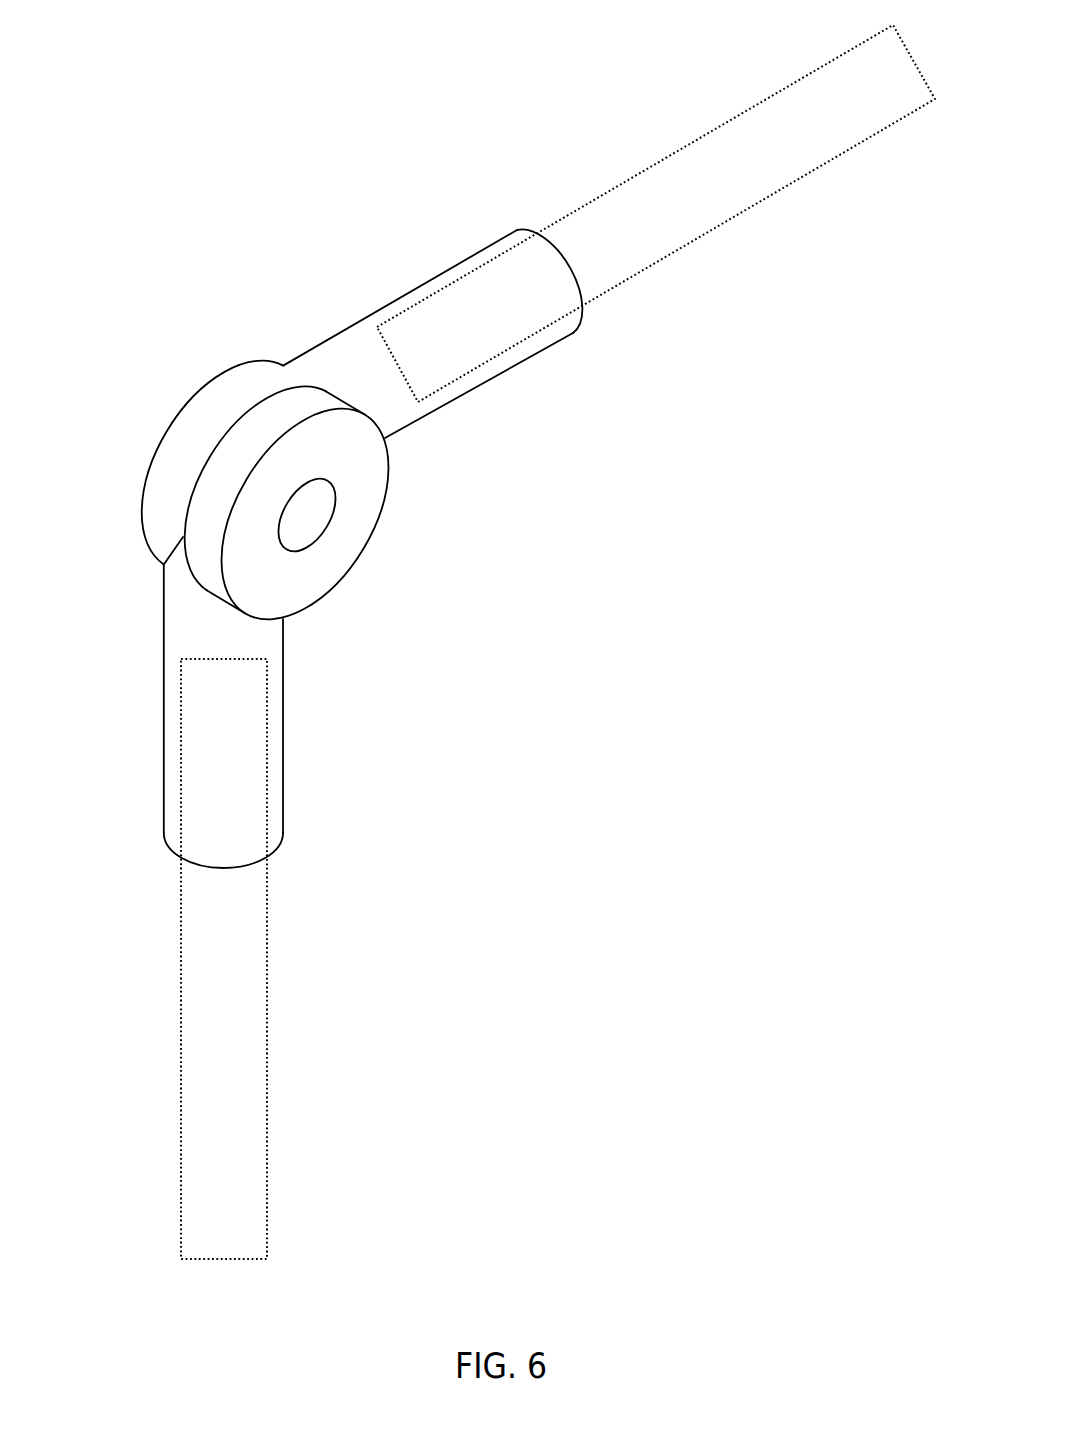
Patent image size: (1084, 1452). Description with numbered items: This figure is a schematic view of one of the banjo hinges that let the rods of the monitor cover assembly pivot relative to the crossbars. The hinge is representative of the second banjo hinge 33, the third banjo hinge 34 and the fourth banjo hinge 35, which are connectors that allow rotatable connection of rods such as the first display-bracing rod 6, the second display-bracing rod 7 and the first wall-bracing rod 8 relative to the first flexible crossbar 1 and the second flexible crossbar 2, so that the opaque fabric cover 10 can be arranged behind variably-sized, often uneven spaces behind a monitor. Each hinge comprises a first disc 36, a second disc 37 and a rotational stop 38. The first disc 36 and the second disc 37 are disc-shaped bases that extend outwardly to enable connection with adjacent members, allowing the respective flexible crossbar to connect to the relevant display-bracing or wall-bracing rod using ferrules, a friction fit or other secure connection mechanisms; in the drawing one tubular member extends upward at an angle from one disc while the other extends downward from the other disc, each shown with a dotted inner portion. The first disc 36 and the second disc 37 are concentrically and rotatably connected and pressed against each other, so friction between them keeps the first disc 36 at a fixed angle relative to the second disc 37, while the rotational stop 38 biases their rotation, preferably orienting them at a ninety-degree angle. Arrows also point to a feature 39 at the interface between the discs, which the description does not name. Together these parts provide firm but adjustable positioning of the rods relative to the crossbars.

The first flexible crossbar 1 is at (609, 231).
The second flexible crossbar 2 is at (728, 220).
The first display-bracing rod 6 is at (322, 911).
The second display-bracing rod 7 is at (322, 911).
The first wall-bracing rod 8 is at (322, 911).
The opaque fabric cover 10 is at (266, 1075).
The second banjo hinge 33 is at (455, 458).
The third banjo hinge 34 is at (455, 458).
The fourth banjo hinge 35 is at (455, 458).
The first disc 36 is at (455, 458).
The second disc 37 is at (343, 562).
The rotational stop 38 is at (183, 437).
The gap between hinge discs 39 is at (284, 376).